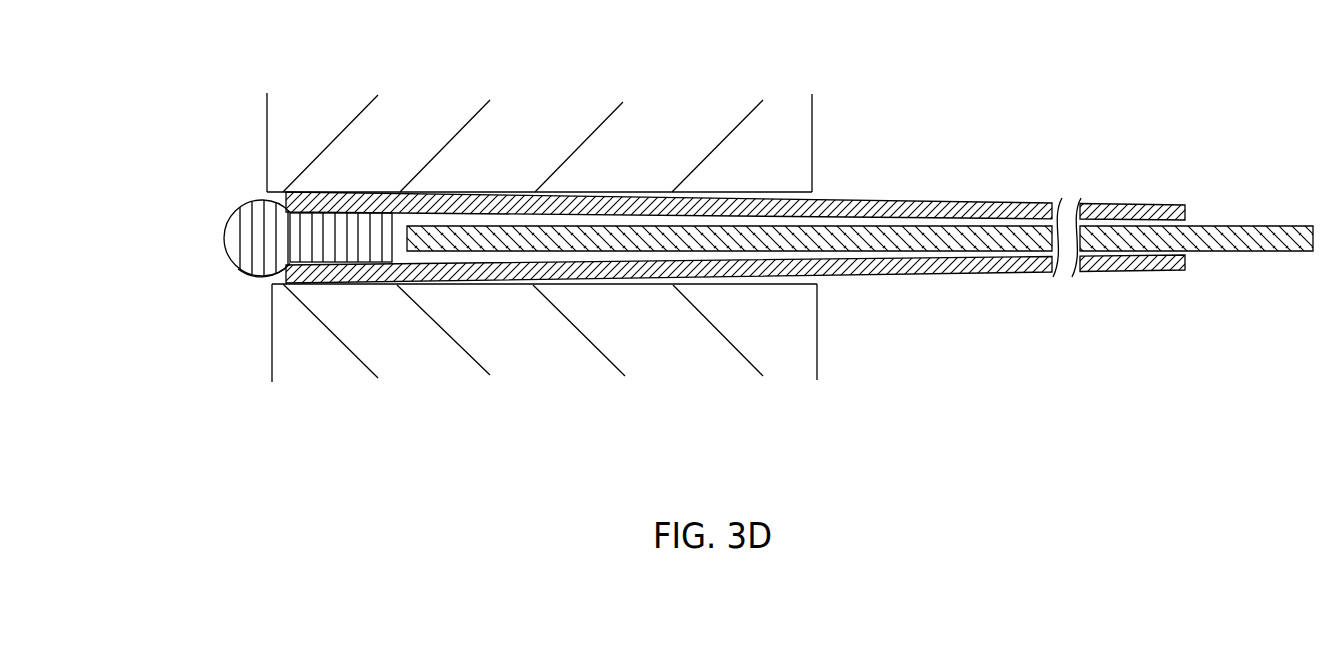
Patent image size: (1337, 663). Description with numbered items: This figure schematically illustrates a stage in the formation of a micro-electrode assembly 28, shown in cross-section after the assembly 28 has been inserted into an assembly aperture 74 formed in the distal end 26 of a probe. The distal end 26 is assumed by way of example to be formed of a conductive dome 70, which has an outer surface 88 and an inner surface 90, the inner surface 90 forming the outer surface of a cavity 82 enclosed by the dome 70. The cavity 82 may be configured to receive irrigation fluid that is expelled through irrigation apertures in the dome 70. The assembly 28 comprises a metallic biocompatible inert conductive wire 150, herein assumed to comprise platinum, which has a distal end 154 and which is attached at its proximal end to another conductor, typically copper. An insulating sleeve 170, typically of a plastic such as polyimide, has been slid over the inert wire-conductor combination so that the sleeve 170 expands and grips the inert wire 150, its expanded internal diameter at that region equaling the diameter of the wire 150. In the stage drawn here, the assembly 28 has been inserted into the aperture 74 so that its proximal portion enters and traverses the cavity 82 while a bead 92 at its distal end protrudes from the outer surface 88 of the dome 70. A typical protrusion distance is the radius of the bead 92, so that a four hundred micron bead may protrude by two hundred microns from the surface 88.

The distal end 26 is at (548, 112).
The assembly 28 is at (980, 205).
The conductive dome 70 is at (812, 128).
The assembly aperture 74 is at (622, 195).
The cavity 82 is at (990, 357).
The outer surface 88 is at (544, 358).
The inner surface 90 is at (817, 368).
The bead 92 is at (247, 273).
The inert conductive wire 150 is at (352, 212).
The distal end of inert wire 154 is at (258, 200).
The insulating sleeve 170 is at (397, 285).